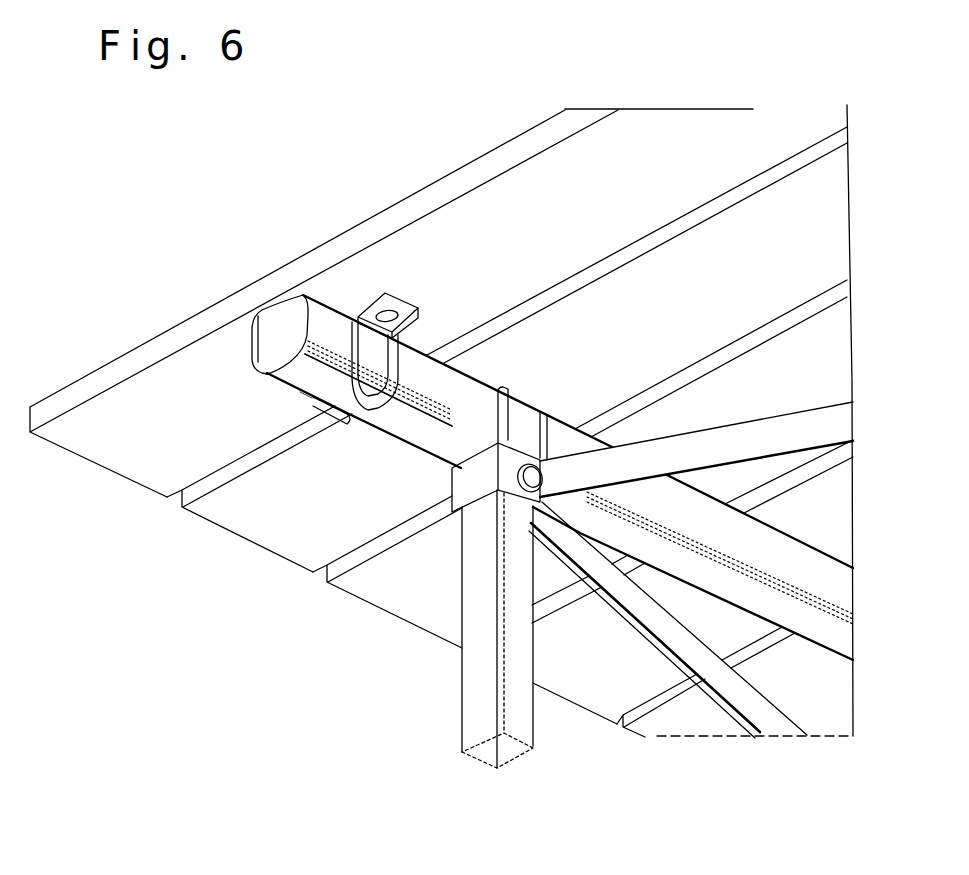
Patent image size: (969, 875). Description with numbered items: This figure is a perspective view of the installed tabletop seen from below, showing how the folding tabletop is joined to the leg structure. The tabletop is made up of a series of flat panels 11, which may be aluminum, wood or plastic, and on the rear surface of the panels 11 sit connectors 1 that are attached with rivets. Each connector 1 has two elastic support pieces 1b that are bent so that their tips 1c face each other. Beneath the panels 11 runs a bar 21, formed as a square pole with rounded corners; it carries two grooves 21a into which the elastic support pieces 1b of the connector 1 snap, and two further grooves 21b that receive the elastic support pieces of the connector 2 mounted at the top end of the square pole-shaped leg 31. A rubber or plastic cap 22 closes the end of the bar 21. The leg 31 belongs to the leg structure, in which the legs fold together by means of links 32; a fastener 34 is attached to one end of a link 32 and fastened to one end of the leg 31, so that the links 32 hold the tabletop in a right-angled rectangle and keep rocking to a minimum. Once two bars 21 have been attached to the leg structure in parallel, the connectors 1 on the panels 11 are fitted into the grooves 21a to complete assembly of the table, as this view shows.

The connector 1 is at (398, 293).
The elastic support piece 1b is at (412, 330).
The tip 1c is at (312, 402).
The connector 2 is at (502, 388).
The panel 11 is at (110, 465).
The bar 21 is at (256, 377).
The groove 21a is at (347, 414).
The groove 21b is at (447, 464).
The cap 22 is at (262, 306).
The leg 31 is at (466, 652).
The link 32 is at (748, 432).
The fastener 34 is at (453, 512).